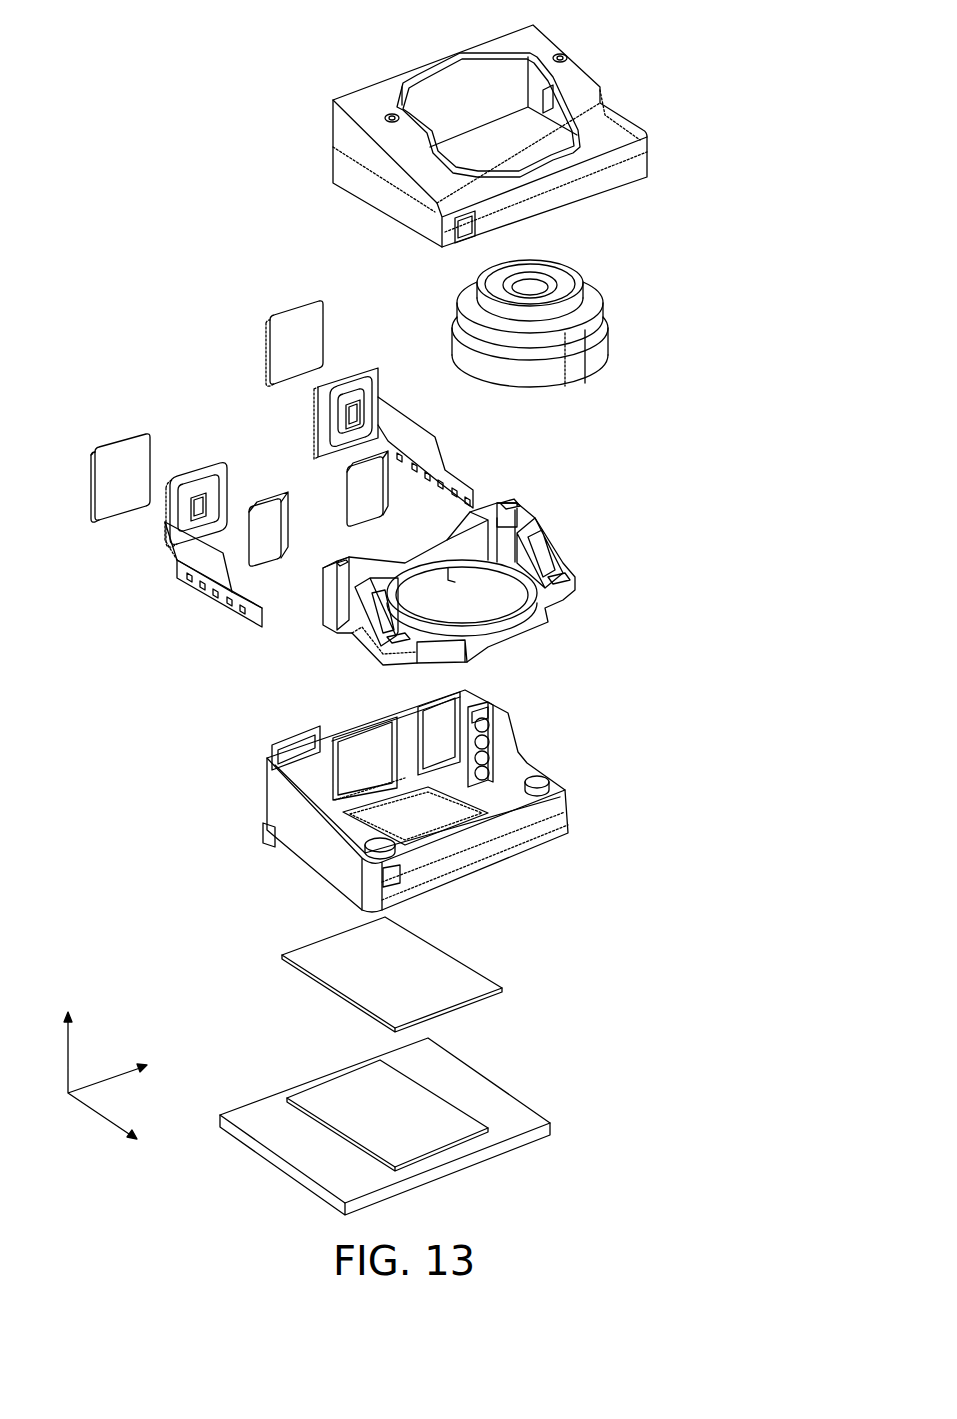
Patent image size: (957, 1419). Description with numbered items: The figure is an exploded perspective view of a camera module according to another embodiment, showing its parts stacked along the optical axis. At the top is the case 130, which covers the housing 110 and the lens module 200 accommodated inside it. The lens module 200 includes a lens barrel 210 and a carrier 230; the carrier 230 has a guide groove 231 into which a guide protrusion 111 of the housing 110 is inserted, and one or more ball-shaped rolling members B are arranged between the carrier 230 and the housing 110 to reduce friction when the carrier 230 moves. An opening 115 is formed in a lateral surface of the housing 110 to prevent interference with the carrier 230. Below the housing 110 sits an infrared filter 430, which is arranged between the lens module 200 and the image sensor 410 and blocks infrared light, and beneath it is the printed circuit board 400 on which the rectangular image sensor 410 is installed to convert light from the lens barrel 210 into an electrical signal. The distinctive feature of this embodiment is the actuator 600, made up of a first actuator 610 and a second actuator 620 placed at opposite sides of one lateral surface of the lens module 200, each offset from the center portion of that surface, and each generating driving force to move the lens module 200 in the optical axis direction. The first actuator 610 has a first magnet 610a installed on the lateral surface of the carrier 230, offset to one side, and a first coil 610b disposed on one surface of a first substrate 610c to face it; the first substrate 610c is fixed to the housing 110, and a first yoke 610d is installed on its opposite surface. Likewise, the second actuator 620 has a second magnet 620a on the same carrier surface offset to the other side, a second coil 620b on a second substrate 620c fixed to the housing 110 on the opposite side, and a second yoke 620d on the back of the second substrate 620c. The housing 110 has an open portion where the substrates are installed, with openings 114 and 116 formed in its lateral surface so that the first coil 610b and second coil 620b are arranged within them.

The case 130 is at (333, 148).
The actuator 600 is at (190, 336).
The first actuator 610 is at (291, 412).
The first magnet 610a is at (270, 495).
The first coil 610b is at (210, 480).
The first substrate 610c is at (165, 505).
The first yoke 610d is at (120, 450).
The second actuator 620 is at (442, 307).
The second magnet 620a is at (385, 482).
The second coil 620b is at (357, 385).
The second substrate 620c is at (330, 450).
The second yoke 620d is at (303, 312).
The lens module 200 is at (705, 303).
The lens barrel 210 is at (612, 352).
The carrier 230 is at (496, 500).
The guide groove 231 is at (525, 515).
The housing 110 is at (530, 832).
The guide protrusion 111 is at (480, 720).
The opening 114 is at (302, 767).
The opening 115 is at (365, 757).
The opening 116 is at (445, 728).
The rolling member B is at (495, 728).
The infrared filter 430 is at (473, 985).
The image sensor 410 is at (420, 1097).
The printed circuit board 400 is at (513, 1110).